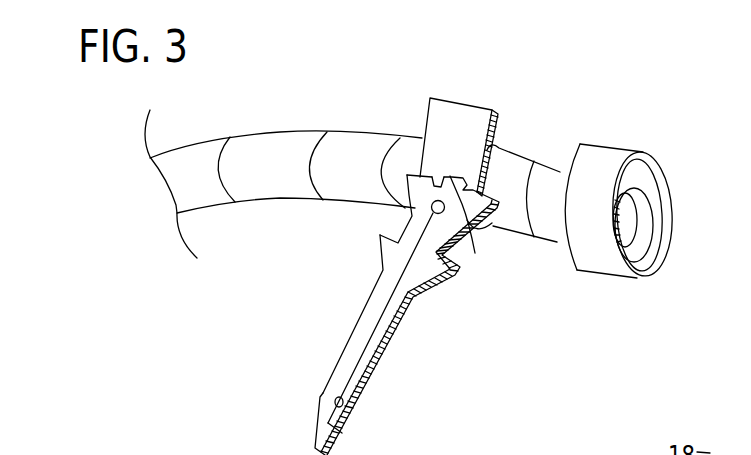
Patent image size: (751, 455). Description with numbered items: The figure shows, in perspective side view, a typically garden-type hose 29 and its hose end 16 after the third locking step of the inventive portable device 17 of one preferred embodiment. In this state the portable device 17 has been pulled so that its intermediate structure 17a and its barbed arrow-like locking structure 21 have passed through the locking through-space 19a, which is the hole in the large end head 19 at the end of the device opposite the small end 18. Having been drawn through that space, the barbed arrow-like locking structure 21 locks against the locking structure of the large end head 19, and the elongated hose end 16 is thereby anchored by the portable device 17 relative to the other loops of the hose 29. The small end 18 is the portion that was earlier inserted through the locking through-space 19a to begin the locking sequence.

The hose end 16 is at (288, 165).
The portable device 17 is at (390, 345).
The intermediate structure 17a is at (358, 322).
The small end 18 is at (342, 433).
The end head 19 is at (470, 120).
The locking through-space 19a is at (475, 253).
The barbed arrow-like locking structure 21 is at (420, 190).
The hose 29 is at (332, 95).